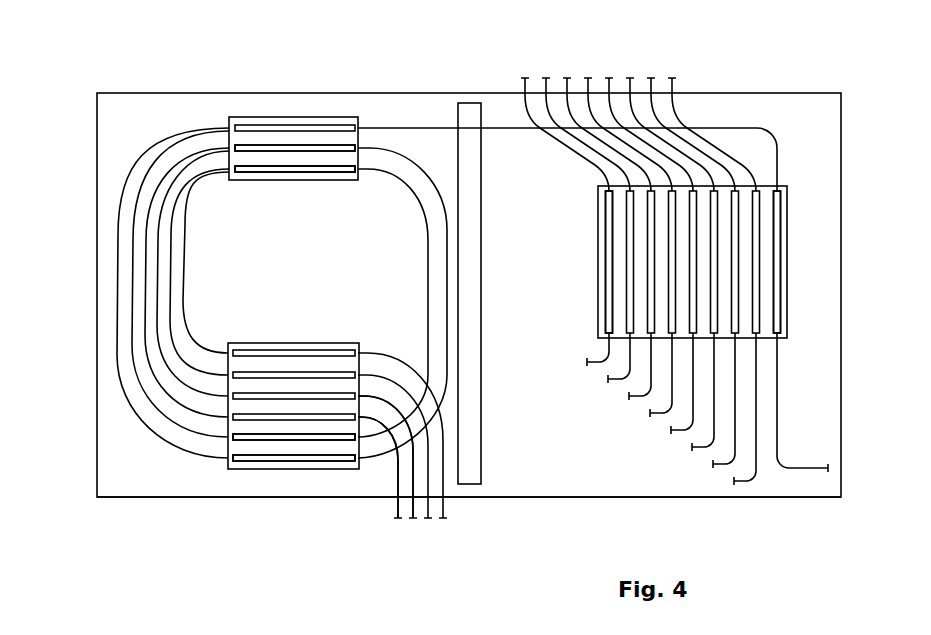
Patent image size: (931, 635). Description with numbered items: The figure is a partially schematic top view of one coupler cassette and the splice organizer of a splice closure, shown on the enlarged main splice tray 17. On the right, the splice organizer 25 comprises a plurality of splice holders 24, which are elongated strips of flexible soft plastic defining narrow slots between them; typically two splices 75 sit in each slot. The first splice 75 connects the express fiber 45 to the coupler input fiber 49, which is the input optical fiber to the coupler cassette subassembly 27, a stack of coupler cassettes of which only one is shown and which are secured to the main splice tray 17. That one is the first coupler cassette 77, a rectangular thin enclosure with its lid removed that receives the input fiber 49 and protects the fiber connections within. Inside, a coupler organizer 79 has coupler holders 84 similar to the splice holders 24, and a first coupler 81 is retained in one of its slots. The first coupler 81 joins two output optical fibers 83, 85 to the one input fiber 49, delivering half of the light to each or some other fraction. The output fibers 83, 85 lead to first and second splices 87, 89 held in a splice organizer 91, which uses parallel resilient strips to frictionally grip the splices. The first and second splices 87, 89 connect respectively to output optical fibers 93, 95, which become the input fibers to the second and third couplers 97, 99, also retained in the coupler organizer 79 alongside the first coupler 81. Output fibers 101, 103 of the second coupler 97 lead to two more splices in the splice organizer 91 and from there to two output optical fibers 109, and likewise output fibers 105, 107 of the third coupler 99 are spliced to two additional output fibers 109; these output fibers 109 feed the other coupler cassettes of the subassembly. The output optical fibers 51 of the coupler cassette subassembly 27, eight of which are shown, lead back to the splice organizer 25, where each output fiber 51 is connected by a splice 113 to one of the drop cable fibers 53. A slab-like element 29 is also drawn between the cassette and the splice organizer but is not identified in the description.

The main splice tray 17 is at (775, 498).
The splice holders 24 is at (787, 244).
The splice organizer 25 is at (803, 290).
The coupler cassette subassembly 27 is at (140, 518).
The slab region 29 is at (470, 263).
The express fiber 45 is at (805, 468).
The coupler input fiber 49 is at (445, 130).
The output optical fibers 51 is at (603, 360).
The drop cable fibers 53 is at (673, 88).
The splices 75 is at (785, 213).
The first coupler cassette 77 is at (420, 103).
The coupler organizer 79 is at (362, 130).
The first coupler 81 is at (282, 130).
The output optical fiber 83 is at (143, 130).
The coupler holders 84 is at (248, 173).
The output optical fiber 85 is at (172, 130).
The first splice 87 is at (260, 458).
The second splice 89 is at (297, 438).
The splice organizer 91 is at (335, 470).
The output optical fiber 93 is at (382, 443).
The output optical fiber 95 is at (372, 440).
The second coupler 97 is at (285, 147).
The third coupler 99 is at (335, 168).
The output fiber 101 is at (146, 228).
The output fiber 103 is at (157, 258).
The output fiber 105 is at (170, 283).
The output fiber 107 is at (185, 318).
The output optical fibers 109 is at (445, 507).
The splice 113 is at (609, 215).